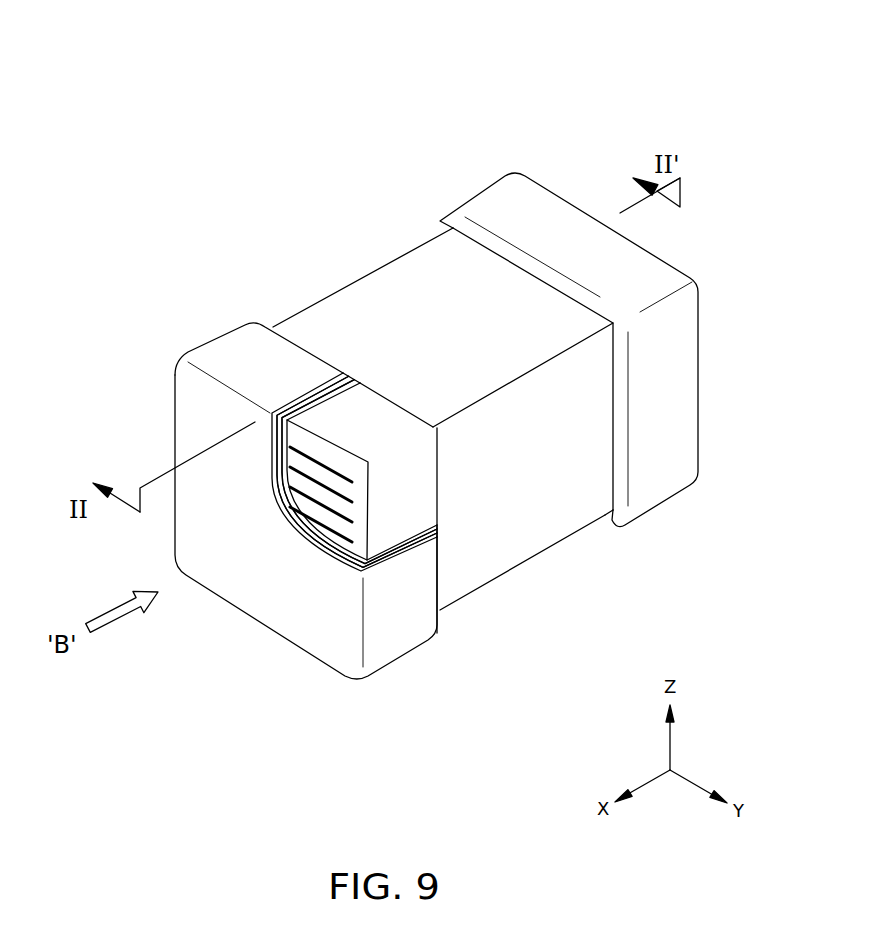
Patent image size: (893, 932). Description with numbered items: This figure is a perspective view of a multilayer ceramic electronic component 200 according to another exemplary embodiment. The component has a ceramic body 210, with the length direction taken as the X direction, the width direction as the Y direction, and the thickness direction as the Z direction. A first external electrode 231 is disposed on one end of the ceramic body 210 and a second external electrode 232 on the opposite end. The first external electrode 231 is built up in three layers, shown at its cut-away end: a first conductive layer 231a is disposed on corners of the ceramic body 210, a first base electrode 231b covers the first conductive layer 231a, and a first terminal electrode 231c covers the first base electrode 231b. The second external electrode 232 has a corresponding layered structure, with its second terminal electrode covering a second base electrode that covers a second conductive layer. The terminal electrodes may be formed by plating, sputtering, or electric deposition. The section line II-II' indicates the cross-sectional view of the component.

The multilayer ceramic electronic component 200 is at (285, 46).
The ceramic body 210 is at (398, 259).
The first external electrode 231 is at (310, 252).
The first conductive layer 231a is at (215, 342).
The first base electrode 231b is at (330, 397).
The first terminal electrode 231c is at (357, 381).
The second external electrode 232 is at (542, 197).